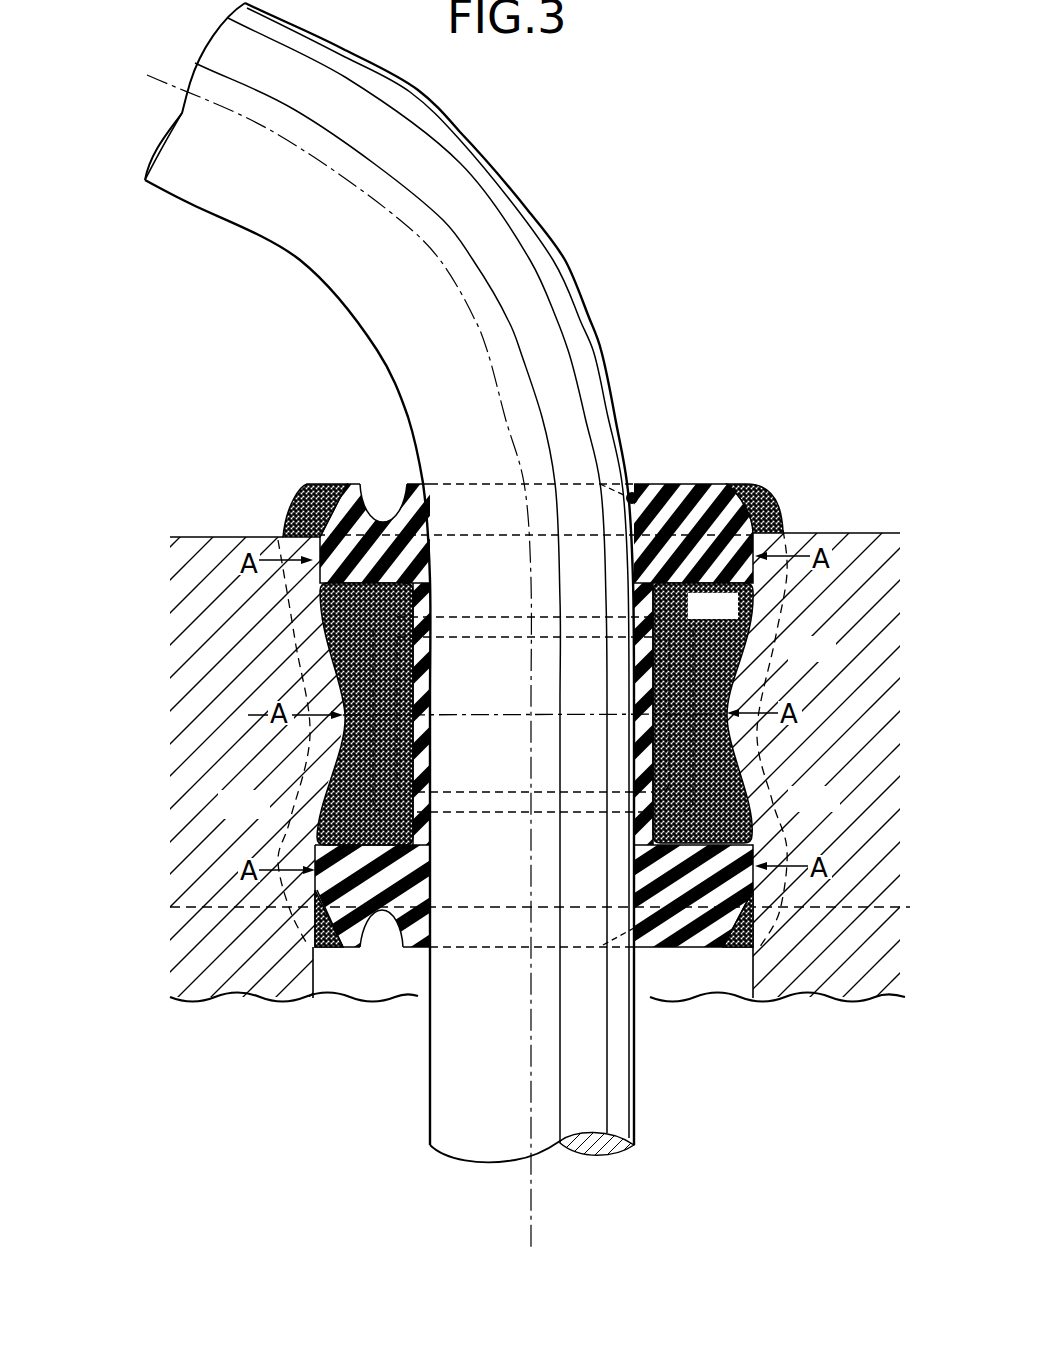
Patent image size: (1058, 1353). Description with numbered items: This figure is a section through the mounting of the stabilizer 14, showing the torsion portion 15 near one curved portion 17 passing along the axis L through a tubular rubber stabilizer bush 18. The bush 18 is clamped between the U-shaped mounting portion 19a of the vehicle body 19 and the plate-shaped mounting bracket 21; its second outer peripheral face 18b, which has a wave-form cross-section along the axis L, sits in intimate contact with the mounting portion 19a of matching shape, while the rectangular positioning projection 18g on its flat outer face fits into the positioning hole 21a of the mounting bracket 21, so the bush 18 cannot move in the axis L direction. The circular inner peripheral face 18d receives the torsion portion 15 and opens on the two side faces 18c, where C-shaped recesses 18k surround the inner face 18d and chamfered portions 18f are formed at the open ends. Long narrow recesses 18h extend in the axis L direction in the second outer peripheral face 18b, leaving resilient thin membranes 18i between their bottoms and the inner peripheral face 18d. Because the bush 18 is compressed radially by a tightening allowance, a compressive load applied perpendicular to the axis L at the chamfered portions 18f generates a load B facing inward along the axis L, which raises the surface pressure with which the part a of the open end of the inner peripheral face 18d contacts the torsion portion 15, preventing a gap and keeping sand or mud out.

The stabilizer 14 is at (649, 1094).
The torsion portion 15 is at (440, 1075).
The curved portion 17 is at (523, 227).
The stabilizer bush 18 is at (328, 472).
The second outer peripheral face 18b is at (297, 503).
The side face 18c is at (688, 481).
The inner peripheral face 18d is at (433, 568).
The chamfered portion 18f is at (633, 494).
The positioning projection 18g is at (490, 775).
The recess 18h is at (340, 842).
The resilient thin membrane 18i is at (422, 687).
The recess 18k is at (362, 508).
The vehicle body 19 is at (836, 518).
The mounting portion 19a is at (732, 645).
The mounting bracket 21 is at (213, 920).
The positioning hole 21a is at (673, 622).
The part of the open end of the inner peripheral face a is at (626, 500).
The load B is at (653, 503).
The axis L is at (532, 1191).